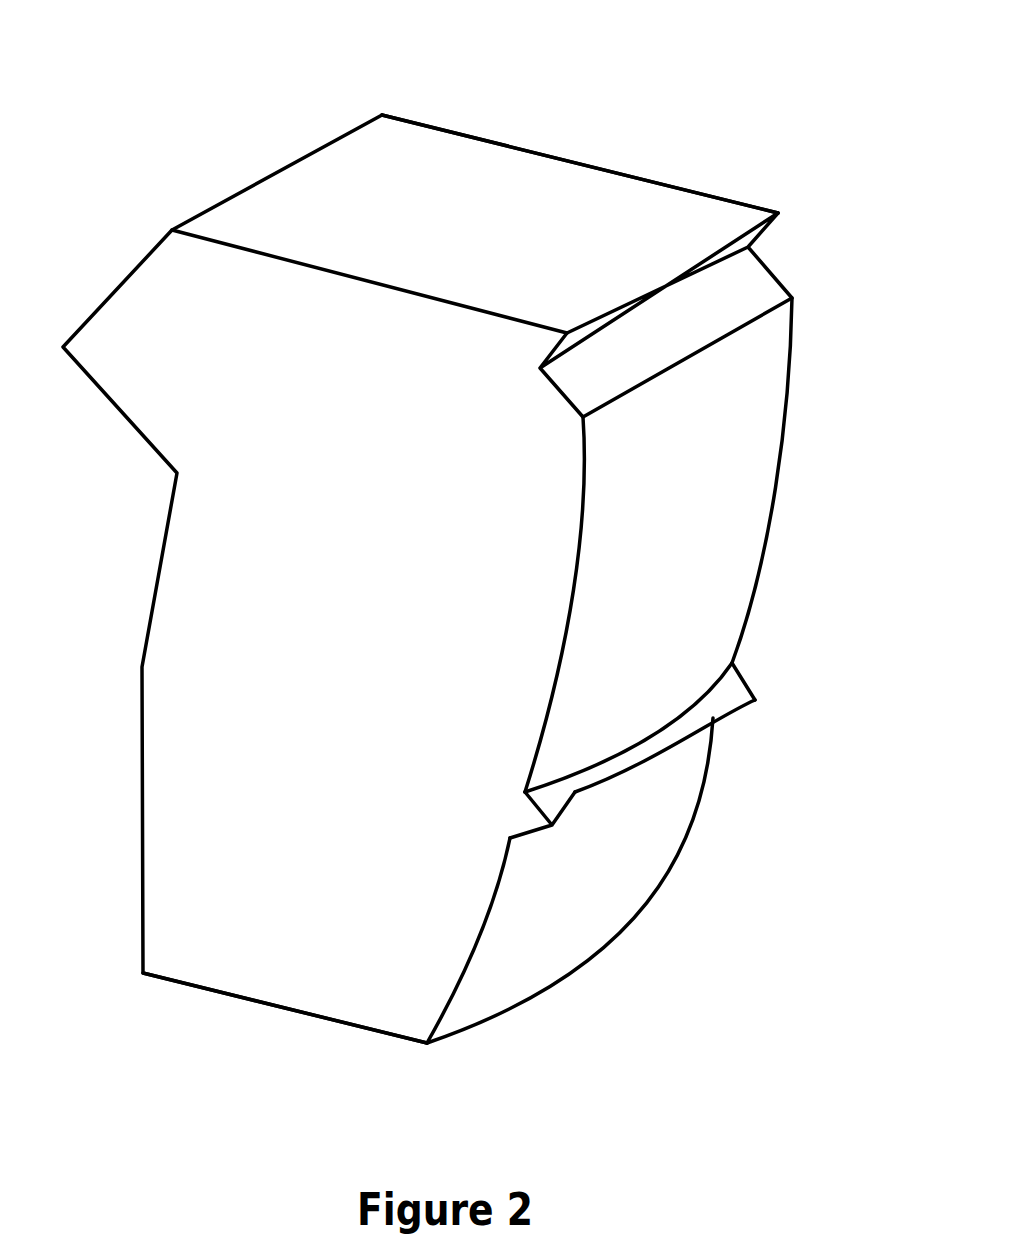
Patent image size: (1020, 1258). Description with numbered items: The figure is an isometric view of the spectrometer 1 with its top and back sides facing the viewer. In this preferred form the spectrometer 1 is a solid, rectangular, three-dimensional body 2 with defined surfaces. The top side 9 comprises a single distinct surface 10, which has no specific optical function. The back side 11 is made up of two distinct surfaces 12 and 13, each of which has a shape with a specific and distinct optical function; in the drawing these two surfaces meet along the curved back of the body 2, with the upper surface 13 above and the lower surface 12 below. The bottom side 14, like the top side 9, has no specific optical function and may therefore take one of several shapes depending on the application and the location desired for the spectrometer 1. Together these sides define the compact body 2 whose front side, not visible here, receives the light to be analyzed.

The spectrometer 1 is at (165, 175).
The three-dimensional body 2 is at (737, 168).
The top side 9 is at (478, 113).
The distinct surface 10 is at (395, 163).
The back side 11 is at (813, 687).
The surface 12 is at (642, 813).
The surface 13 is at (697, 479).
The bottom side 14 is at (300, 1028).